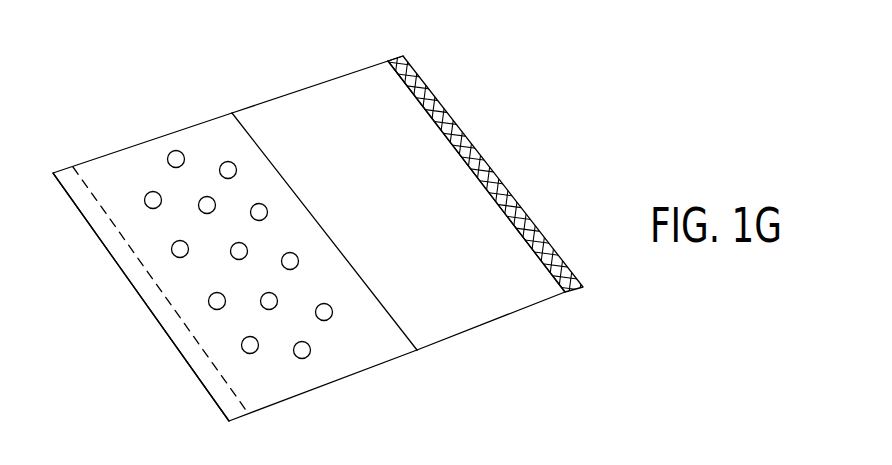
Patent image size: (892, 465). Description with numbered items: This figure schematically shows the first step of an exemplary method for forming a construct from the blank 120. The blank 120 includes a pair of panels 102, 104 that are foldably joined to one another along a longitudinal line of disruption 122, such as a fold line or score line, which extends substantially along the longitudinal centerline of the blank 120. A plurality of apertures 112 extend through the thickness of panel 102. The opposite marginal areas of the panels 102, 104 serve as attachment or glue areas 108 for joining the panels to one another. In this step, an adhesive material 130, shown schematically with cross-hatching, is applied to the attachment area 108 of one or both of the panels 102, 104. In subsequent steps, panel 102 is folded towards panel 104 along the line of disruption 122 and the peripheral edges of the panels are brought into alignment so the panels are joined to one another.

The panel 102 is at (133, 150).
The panel 104 is at (306, 100).
The attachment area 108 is at (70, 172).
The apertures 112 is at (312, 349).
The blank 120 is at (526, 81).
The longitudinal line of disruption 122 is at (318, 225).
The adhesive material 130 is at (535, 223).